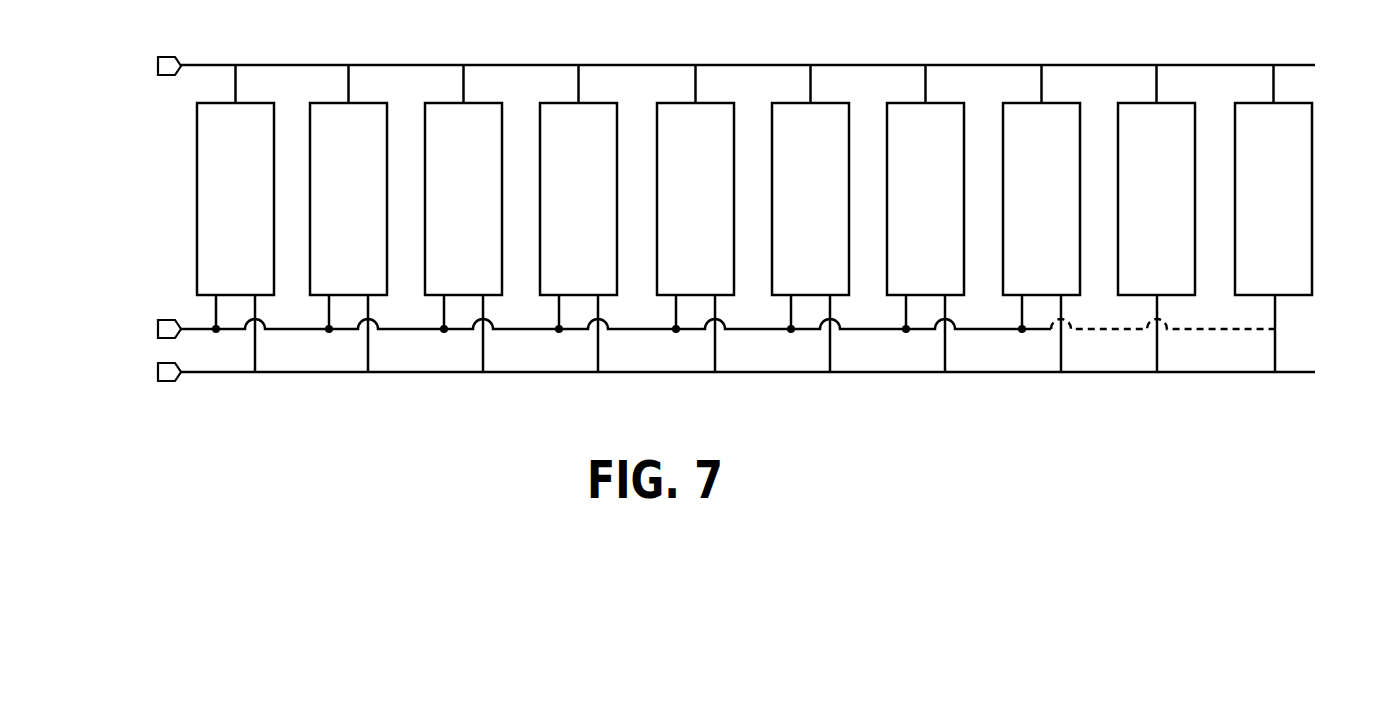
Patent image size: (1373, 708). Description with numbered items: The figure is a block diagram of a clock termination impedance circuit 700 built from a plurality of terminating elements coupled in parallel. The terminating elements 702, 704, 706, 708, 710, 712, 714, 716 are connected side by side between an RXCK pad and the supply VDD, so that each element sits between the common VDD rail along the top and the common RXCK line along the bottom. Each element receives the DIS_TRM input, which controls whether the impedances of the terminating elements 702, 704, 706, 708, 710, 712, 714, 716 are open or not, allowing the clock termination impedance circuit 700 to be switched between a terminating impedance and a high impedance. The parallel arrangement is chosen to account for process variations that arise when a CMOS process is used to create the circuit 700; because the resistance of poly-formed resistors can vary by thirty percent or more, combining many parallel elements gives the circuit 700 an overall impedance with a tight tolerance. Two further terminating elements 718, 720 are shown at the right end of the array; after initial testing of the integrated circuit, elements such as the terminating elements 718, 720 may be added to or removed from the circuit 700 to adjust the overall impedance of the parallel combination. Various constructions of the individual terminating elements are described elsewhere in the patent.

The clock termination impedance circuit 700 is at (346, 439).
The terminating element 702 is at (245, 103).
The terminating element 704 is at (361, 103).
The terminating element 706 is at (478, 103).
The terminating element 708 is at (595, 103).
The terminating element 710 is at (708, 103).
The terminating element 712 is at (824, 103).
The terminating element 714 is at (940, 103).
The terminating element 716 is at (1065, 103).
The terminating element 718 is at (1168, 103).
The terminating element 720 is at (1290, 103).